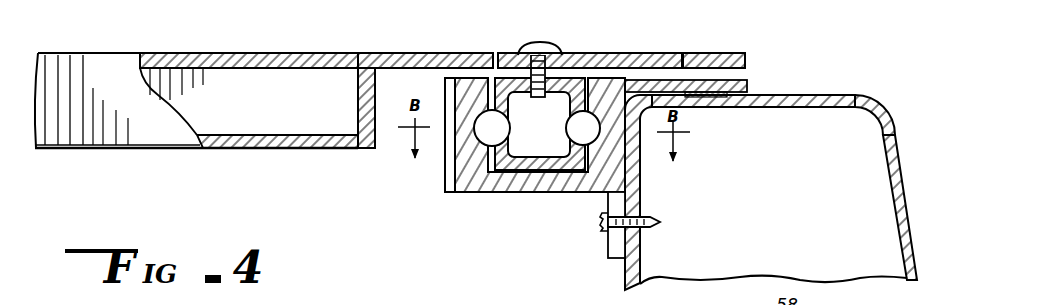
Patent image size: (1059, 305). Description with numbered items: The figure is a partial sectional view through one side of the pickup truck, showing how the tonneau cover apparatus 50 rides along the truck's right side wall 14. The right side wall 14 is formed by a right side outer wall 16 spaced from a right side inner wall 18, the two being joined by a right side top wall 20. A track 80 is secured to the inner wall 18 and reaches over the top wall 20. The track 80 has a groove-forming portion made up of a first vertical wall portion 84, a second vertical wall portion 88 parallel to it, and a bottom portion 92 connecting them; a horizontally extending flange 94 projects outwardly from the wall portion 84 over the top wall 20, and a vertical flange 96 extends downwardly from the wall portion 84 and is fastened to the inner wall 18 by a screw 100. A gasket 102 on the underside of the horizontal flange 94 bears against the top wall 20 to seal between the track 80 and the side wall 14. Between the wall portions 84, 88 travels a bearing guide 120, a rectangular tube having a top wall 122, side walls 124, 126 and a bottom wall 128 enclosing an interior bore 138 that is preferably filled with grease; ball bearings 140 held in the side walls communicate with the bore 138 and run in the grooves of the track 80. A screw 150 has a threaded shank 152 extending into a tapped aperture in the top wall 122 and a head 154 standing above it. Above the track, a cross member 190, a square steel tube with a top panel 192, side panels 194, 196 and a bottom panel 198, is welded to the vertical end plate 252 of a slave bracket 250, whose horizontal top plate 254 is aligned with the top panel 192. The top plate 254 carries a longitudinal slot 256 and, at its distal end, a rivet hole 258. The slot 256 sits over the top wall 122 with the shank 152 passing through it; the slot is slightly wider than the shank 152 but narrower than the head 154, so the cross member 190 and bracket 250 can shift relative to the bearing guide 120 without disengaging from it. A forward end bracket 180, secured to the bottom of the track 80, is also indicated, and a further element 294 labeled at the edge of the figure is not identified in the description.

The right side wall 14 is at (901, 115).
The right side outer wall 16 is at (909, 190).
The right side inner wall 18 is at (643, 274).
The right side top wall 20 is at (818, 96).
The tonneau cover apparatus 50 is at (343, 181).
The track 80 is at (470, 201).
The vertical wall portion 84 is at (635, 160).
The second vertical wall portion 88 is at (463, 174).
The bottom portion 92 is at (486, 194).
The horizontally extending flange 94 is at (746, 90).
The vertical flange 96 is at (613, 252).
The screw 100 is at (600, 227).
The gasket 102 is at (703, 99).
The bearing guide 120 is at (581, 62).
The top wall 122 is at (562, 84).
The side wall 124 is at (571, 151).
The side wall 126 is at (506, 101).
The bottom wall 128 is at (556, 173).
The interior bore 138 is at (521, 166).
The ball bearings 140 is at (512, 129).
The screw 150 is at (541, 44).
The threaded shank 152 is at (520, 52).
The head 154 is at (530, 46).
The forward end bracket 180 is at (440, 163).
The cross member 190 is at (152, 160).
The top panel 192 is at (256, 53).
The side panel 194 is at (300, 125).
The side panel 196 is at (52, 149).
The bottom panel 198 is at (238, 150).
The slave bracket 250 is at (361, 46).
The vertical end plate 252 is at (373, 107).
The horizontal top plate 254 is at (394, 53).
The slot 256 is at (492, 54).
The rivet hole 258 is at (692, 63).
The member 294 is at (460, 295).